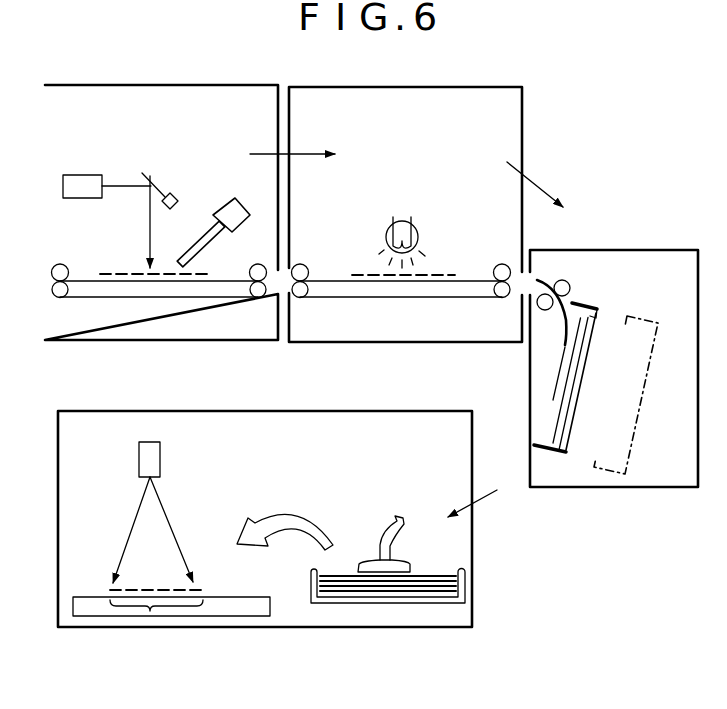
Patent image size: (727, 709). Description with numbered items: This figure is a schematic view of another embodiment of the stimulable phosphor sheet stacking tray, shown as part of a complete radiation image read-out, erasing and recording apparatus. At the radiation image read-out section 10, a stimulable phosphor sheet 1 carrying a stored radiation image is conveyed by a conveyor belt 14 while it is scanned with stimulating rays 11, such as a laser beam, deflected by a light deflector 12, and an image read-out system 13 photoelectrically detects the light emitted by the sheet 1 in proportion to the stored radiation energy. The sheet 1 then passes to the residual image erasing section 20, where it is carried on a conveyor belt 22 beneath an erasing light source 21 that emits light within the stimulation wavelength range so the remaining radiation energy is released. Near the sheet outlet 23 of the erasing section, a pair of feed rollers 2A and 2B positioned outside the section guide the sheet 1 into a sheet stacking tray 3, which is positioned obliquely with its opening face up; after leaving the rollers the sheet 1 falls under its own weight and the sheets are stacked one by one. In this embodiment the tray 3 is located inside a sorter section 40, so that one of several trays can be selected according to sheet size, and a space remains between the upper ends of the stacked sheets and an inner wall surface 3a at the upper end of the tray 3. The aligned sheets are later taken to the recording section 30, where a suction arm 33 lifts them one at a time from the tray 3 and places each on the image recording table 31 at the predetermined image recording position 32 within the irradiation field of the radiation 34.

The stimulable phosphor sheet 1 is at (108, 273).
The feed roller 2A is at (538, 305).
The feed roller 2B is at (561, 280).
The sheet stacking tray 3 is at (585, 303).
The inner wall surface 3a is at (600, 317).
The radiation image read-out section 10 is at (117, 102).
The stimulating rays 11 is at (117, 185).
The light deflector 12 is at (151, 172).
The image read-out system 13 is at (197, 240).
The conveyor belt 14 is at (235, 290).
The residual image erasing section 20 is at (490, 112).
The erasing light source 21 is at (416, 228).
The conveyor belt 22 is at (388, 296).
The sheet outlet 23 is at (510, 264).
The recording section 30 is at (257, 437).
The image recording table 31 is at (236, 606).
The image recording position 32 is at (155, 615).
The suction arm 33 is at (378, 532).
The radiation 34 is at (180, 542).
The sorter section 40 is at (640, 272).